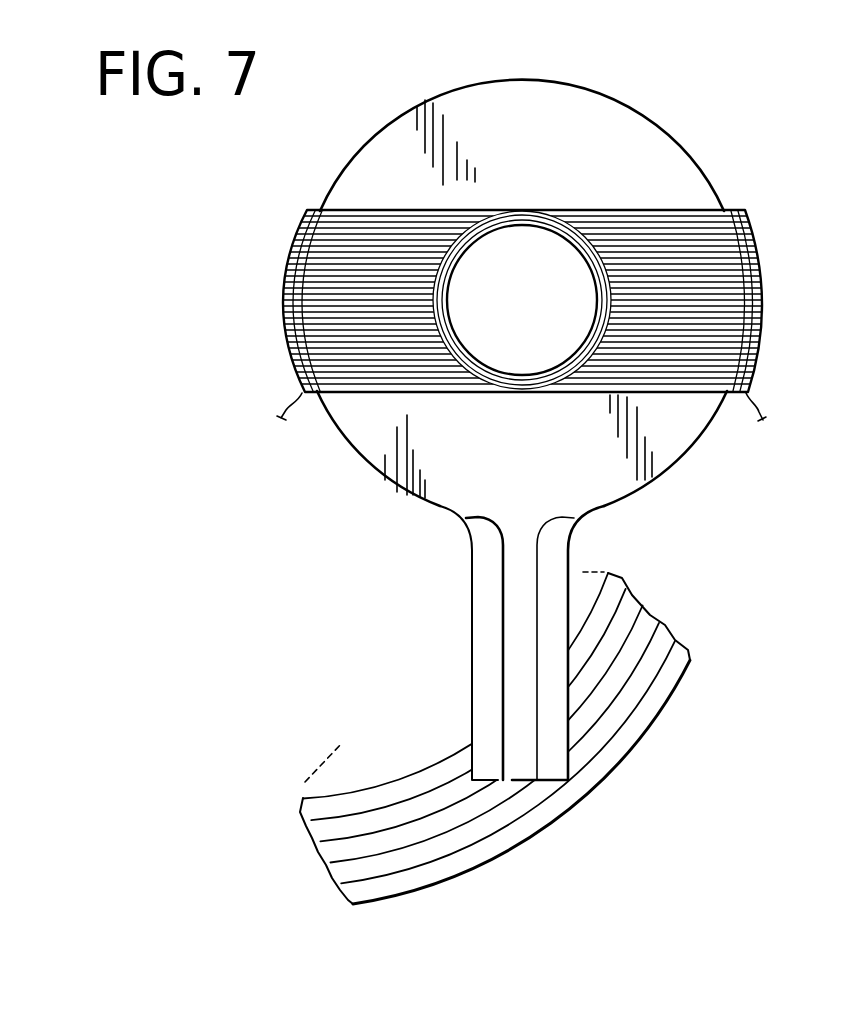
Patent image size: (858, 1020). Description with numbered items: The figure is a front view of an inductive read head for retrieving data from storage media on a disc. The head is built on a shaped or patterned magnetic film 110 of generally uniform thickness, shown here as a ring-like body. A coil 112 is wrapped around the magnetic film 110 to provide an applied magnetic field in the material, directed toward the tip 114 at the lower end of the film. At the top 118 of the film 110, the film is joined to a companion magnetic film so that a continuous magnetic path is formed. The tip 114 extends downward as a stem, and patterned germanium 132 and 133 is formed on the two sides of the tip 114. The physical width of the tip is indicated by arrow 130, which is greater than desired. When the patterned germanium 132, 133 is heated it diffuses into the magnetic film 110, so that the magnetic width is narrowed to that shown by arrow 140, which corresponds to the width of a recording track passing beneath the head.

The magnetic film 110 is at (681, 181).
The top of film 118 is at (628, 116).
The coil 112 is at (759, 266).
The patterned germanium 132 is at (483, 534).
The patterned germanium 133 is at (553, 546).
The arrow 130 is at (630, 675).
The arrow 140 is at (615, 718).
The tip 114 is at (516, 775).